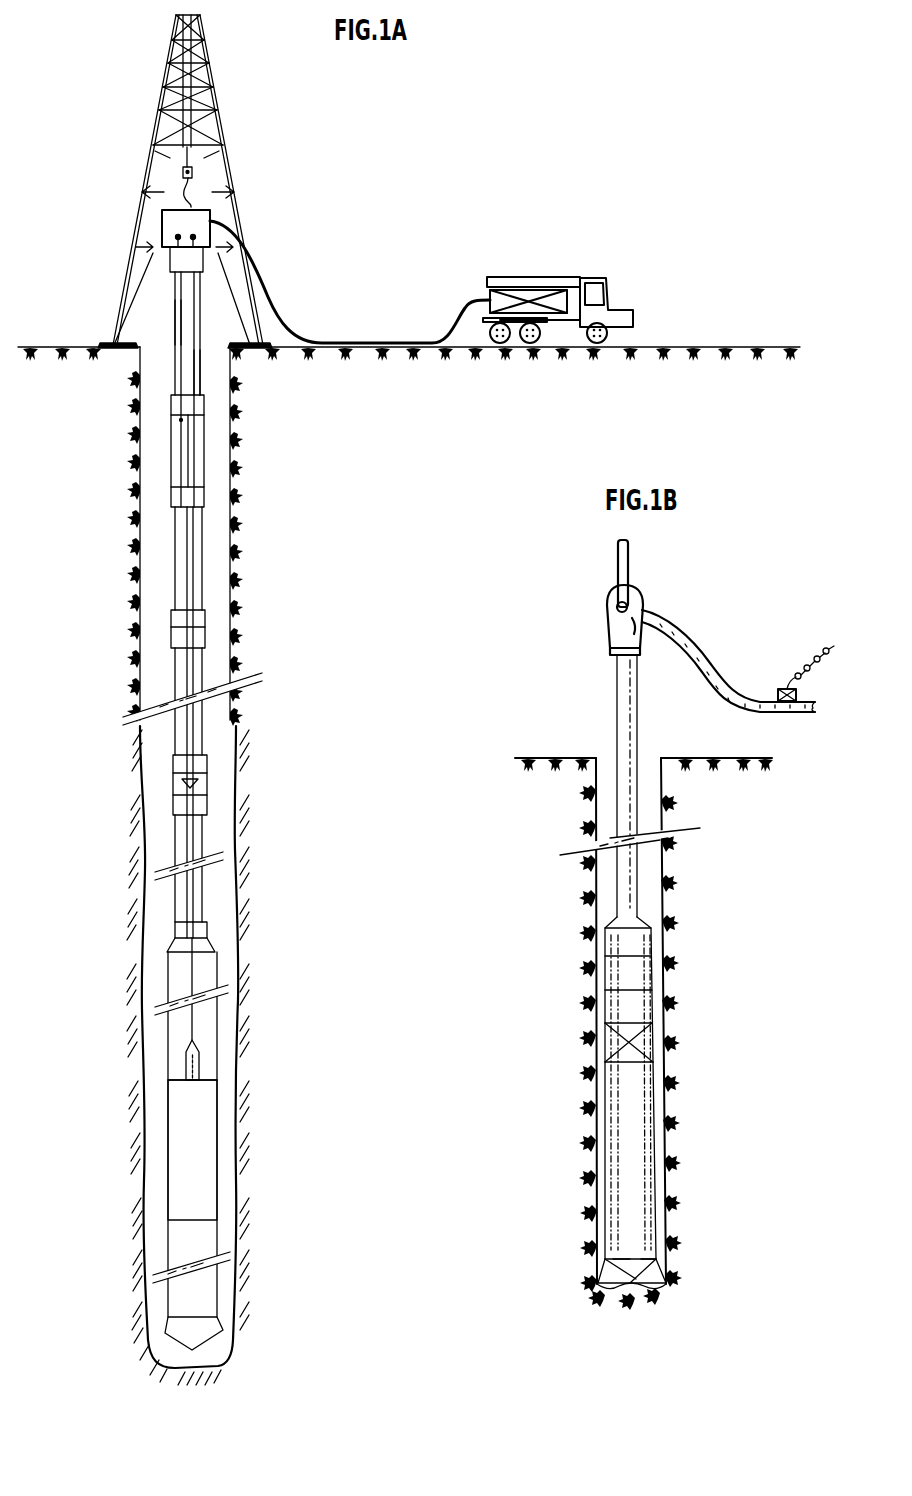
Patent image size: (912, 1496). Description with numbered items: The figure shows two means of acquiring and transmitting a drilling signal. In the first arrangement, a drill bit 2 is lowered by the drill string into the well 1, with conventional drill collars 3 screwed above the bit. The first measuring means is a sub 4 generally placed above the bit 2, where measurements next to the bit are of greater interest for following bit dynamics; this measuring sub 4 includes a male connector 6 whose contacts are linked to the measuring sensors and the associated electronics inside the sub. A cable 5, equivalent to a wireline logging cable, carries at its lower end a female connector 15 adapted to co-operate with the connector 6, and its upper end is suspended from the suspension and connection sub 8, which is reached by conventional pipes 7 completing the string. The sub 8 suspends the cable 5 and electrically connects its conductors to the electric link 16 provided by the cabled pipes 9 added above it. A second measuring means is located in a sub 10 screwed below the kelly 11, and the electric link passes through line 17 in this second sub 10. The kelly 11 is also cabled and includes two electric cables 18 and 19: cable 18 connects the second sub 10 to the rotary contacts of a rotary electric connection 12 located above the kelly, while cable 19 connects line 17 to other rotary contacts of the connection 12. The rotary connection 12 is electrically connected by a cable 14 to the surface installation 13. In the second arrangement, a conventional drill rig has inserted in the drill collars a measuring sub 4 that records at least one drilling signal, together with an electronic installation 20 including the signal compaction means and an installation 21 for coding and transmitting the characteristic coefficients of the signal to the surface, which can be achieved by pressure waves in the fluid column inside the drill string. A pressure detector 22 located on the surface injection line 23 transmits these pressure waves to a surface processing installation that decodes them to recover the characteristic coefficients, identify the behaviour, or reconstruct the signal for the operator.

In FIG. 1A, the well 1 is at (235, 776).
In FIG. 1B, the well 1 is at (612, 776).
In FIG. 1A, the drill bit 2 is at (182, 1330).
In FIG. 1B, the drill bit 2 is at (658, 1276).
In FIG. 1A, the drill collars 3 is at (178, 975).
In FIG. 1A, the measuring sub 4 is at (185, 1155).
In FIG. 1B, the measuring sub 4 is at (632, 1042).
In FIG. 1A, the cable 5 is at (195, 975).
In FIG. 1A, the male connector 6 is at (190, 1082).
In FIG. 1A, the pipes 7 is at (178, 826).
In FIG. 1B, the pipes 7 is at (617, 693).
In FIG. 1A, the suspension and connection sub 8 is at (175, 778).
In FIG. 1A, the cabled pipes 9 is at (185, 547).
In FIG. 1A, the second measuring sub 10 is at (183, 447).
In FIG. 1A, the kelly 11 is at (185, 287).
In FIG. 1A, the rotary electric connection 12 is at (162, 221).
In FIG. 1A, the surface installation 13 is at (487, 297).
In FIG. 1A, the cable 14 is at (386, 342).
In FIG. 1A, the female connector 15 is at (200, 1048).
In FIG. 1A, the electric link 16 is at (195, 555).
In FIG. 1A, the electric link passage 17 is at (200, 441).
In FIG. 1A, the electric cable 18 is at (178, 322).
In FIG. 1A, the electric cable 19 is at (200, 374).
In FIG. 1B, the electronic installation 20 is at (630, 1012).
In FIG. 1B, the coding and transmitting installation 21 is at (633, 970).
In FIG. 1B, the pressure detector 22 is at (775, 688).
In FIG. 1B, the surface injection line 23 is at (693, 632).